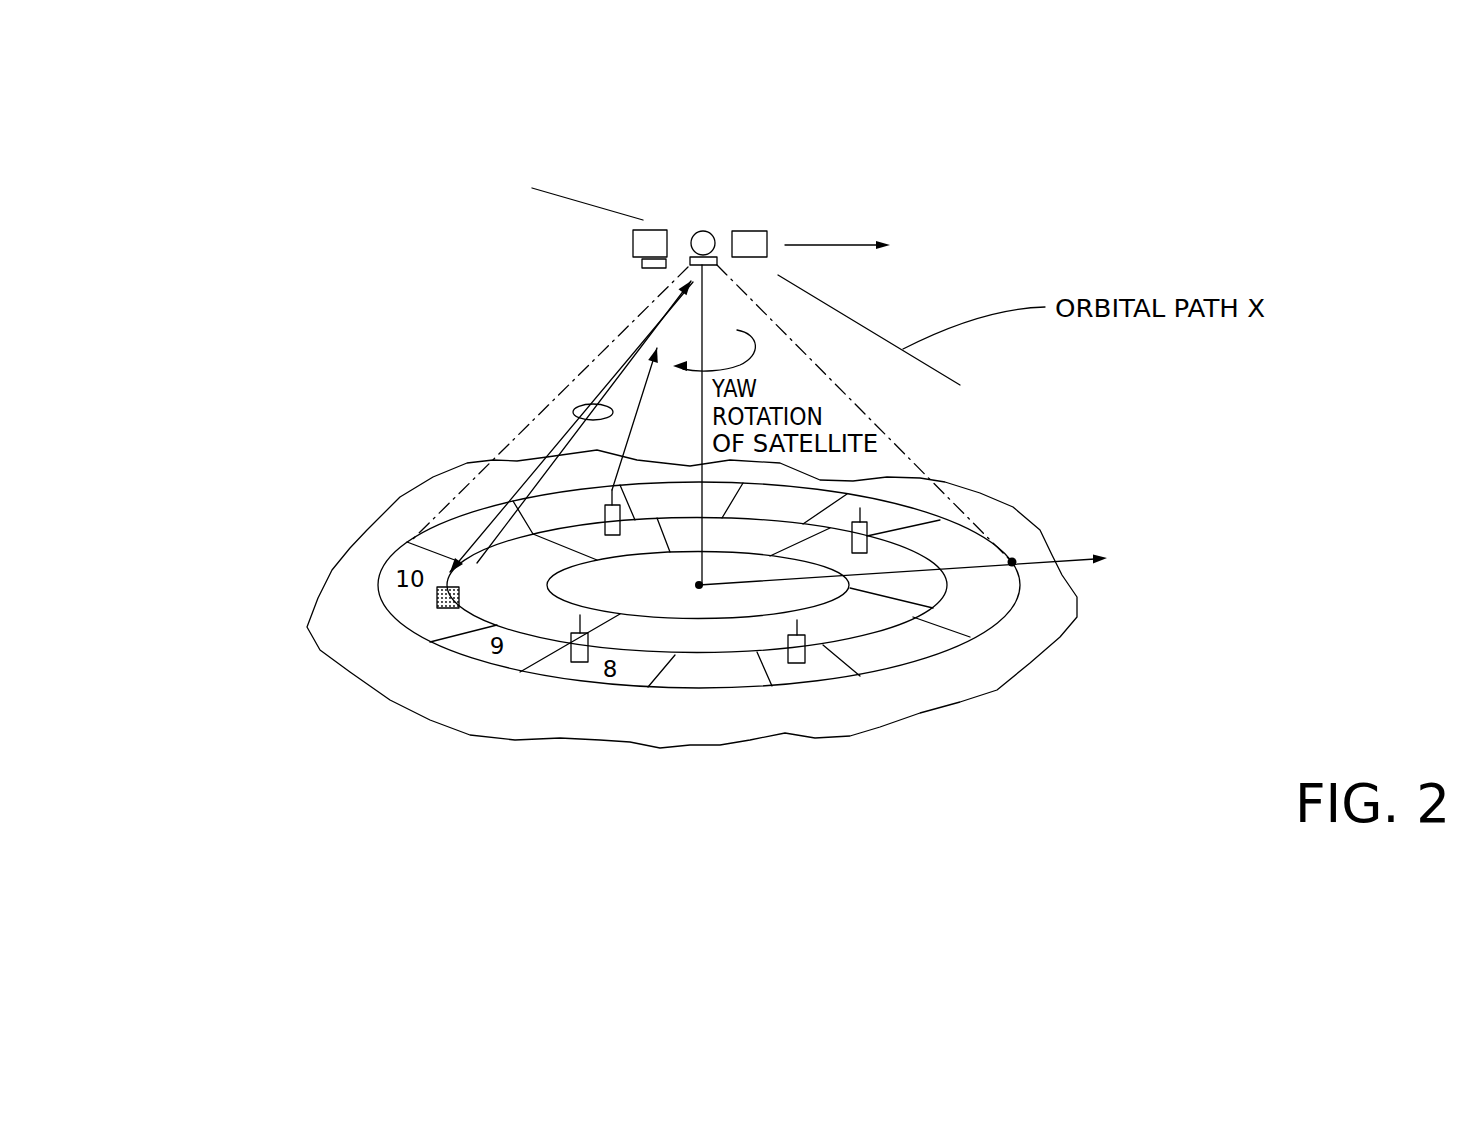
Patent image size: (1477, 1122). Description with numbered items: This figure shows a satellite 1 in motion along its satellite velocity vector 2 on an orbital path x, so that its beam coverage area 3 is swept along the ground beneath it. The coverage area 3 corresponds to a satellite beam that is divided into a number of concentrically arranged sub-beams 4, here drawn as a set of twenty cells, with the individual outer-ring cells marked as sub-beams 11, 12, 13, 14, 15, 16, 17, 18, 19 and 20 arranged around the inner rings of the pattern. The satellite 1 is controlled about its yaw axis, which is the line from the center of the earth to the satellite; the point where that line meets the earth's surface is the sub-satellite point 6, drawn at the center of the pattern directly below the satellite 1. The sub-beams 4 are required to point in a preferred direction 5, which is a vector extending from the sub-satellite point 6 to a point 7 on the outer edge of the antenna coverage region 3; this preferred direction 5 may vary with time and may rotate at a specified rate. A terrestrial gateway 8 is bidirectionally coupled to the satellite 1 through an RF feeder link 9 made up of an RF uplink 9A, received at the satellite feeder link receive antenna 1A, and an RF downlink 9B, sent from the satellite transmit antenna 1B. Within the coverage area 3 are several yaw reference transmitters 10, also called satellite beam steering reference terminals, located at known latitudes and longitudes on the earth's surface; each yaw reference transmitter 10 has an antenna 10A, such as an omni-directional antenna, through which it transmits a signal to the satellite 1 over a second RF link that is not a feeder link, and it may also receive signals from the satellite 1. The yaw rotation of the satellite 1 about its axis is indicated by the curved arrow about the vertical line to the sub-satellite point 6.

The satellite 1 is at (710, 234).
The satellite feeder link receive antenna 1A is at (712, 413).
The satellite transmit antenna 1B is at (642, 263).
The satellite velocity vector 2 is at (820, 243).
The coverage area 3 is at (920, 659).
The sub-beams 4 is at (878, 677).
The preferred direction 5 is at (1068, 560).
The sub-satellite point 6 is at (699, 585).
The point on the outer edge of the coverage region 7 is at (1012, 562).
The terrestrial gateway 8 is at (428, 617).
The RF link 9 is at (650, 397).
The RF uplink 9A is at (640, 345).
The RF downlink 9B is at (557, 442).
The yaw reference transmitters 10 is at (620, 537).
The antenna 10A is at (580, 624).
The sub beam 11 is at (437, 542).
The sub beam 12 is at (547, 513).
The sub beam 13 is at (651, 502).
The sub beam 14 is at (752, 500).
The sub beam 15 is at (829, 513).
The sub beam 16 is at (911, 537).
The sub beam 17 is at (954, 609).
The sub beam 18 is at (870, 656).
The sub beam 19 is at (797, 669).
The sub beam 20 is at (687, 671).